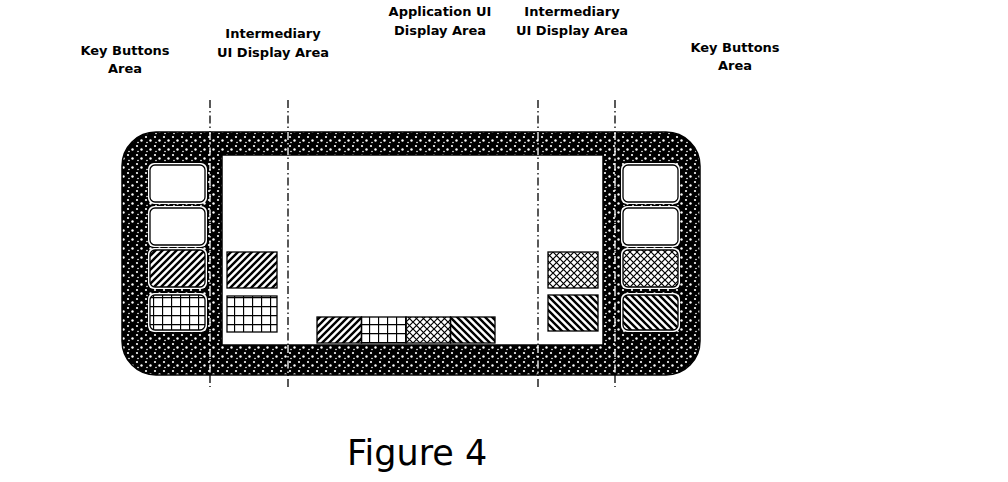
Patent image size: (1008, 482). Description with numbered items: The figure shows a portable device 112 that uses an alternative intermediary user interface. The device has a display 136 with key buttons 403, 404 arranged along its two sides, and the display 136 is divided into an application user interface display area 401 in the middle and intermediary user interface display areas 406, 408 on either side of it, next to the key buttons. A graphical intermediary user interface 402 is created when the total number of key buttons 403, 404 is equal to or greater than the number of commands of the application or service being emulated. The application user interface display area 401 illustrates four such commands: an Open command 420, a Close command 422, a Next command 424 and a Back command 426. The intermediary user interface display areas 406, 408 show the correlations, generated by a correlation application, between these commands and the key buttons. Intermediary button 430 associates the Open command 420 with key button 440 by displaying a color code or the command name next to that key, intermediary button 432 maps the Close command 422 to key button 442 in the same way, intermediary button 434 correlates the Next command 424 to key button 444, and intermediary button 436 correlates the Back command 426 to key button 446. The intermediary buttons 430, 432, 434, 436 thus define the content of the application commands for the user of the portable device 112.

The portable device 112 is at (152, 372).
The display 136 is at (389, 225).
The application user interface display area 401 is at (413, 244).
The graphical intermediary user interface 402 is at (424, 341).
The key buttons 403 is at (132, 215).
The key buttons 404 is at (705, 213).
The intermediary user interface display area 406 is at (254, 263).
The intermediary user interface display area 408 is at (573, 269).
The Open command 420 is at (340, 317).
The Close command 422 is at (385, 317).
The Next command 424 is at (428, 317).
The Back command 426 is at (475, 317).
The intermediary button 430 is at (252, 250).
The intermediary button 432 is at (252, 332).
The intermediary button 434 is at (570, 252).
The intermediary button 436 is at (572, 331).
The key button 440 is at (150, 268).
The key button 442 is at (150, 312).
The key button 444 is at (680, 270).
The key button 446 is at (680, 318).